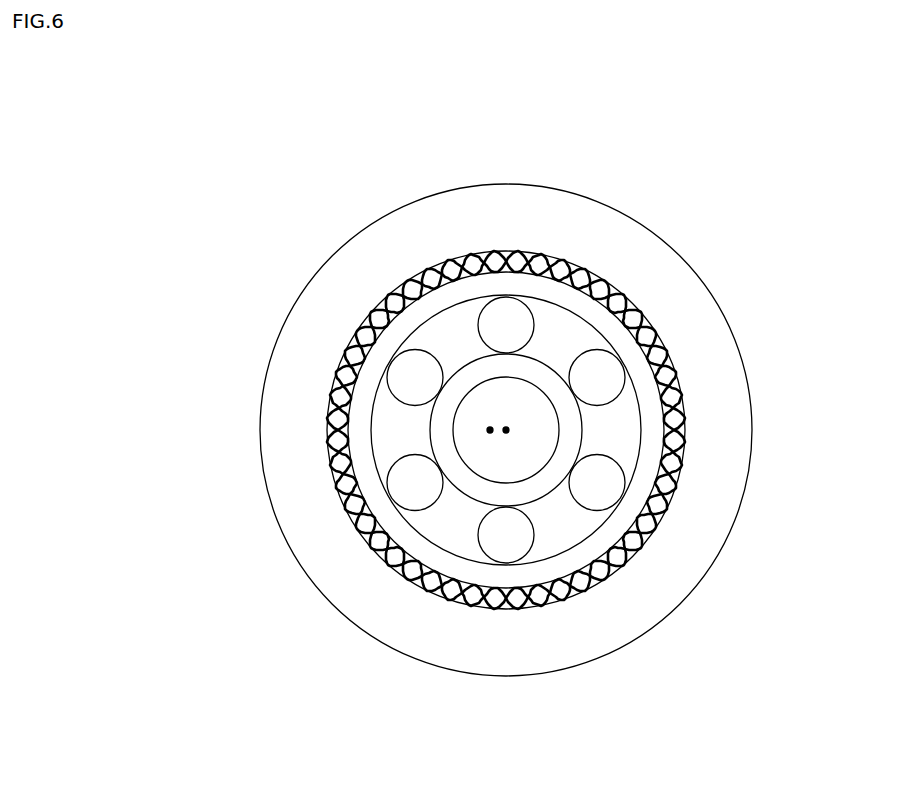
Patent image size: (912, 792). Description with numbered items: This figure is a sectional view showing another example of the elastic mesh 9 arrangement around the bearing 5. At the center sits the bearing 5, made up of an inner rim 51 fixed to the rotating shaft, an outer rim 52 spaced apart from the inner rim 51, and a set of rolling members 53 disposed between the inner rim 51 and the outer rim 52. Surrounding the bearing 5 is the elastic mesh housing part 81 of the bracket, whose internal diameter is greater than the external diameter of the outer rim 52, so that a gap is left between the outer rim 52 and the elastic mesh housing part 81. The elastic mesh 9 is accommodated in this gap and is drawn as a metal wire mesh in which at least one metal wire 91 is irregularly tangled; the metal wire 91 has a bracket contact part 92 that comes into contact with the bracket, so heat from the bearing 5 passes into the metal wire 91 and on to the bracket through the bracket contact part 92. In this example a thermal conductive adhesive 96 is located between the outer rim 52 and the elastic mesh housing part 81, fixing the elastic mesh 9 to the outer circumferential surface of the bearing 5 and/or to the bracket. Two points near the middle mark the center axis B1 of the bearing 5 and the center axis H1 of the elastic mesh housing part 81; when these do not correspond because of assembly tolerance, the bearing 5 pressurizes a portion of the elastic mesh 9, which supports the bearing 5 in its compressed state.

The bearing 5 is at (585, 110).
The elastic mesh 9 is at (336, 360).
The inner rim 51 is at (540, 375).
The outer rim 52 is at (457, 290).
The rolling member 53 is at (506, 310).
The elastic mesh housing part 81 is at (738, 410).
The metal wire 91 is at (330, 403).
The bracket contact part 92 is at (333, 441).
The thermal conductive adhesive 96 is at (418, 270).
The center axis of the elastic mesh housing part H1 is at (490, 433).
The center axis of the bearing B1 is at (506, 433).